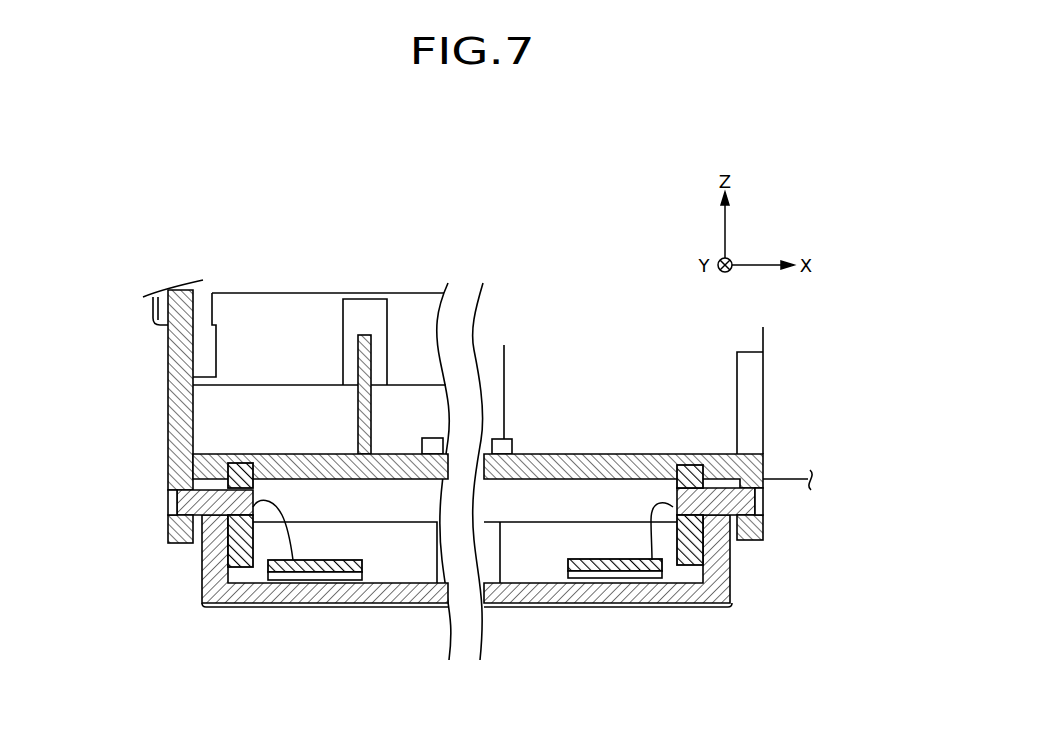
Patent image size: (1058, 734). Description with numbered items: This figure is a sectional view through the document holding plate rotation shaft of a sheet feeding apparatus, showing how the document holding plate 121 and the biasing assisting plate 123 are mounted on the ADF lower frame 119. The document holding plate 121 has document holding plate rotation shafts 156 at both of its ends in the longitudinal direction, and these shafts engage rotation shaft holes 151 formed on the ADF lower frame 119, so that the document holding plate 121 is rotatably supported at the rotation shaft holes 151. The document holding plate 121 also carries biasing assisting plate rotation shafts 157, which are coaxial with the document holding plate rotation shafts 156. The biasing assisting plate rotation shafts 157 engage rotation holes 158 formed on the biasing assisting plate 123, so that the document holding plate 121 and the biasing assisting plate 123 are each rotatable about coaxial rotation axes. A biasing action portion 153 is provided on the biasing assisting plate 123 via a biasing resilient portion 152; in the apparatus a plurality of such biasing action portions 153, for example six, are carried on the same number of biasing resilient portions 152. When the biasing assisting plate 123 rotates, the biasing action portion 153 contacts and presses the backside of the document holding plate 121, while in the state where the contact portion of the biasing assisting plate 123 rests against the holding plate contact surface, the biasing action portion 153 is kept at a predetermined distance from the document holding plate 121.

The ADF lower frame 119 is at (167, 360).
The biasing assisting plate 123 is at (237, 467).
The document holding plate 121 is at (230, 597).
The rotation shaft holes 151 is at (168, 512).
The document holding plate rotation shafts 156 is at (173, 503).
The biasing assisting plate rotation shafts 157 is at (253, 482).
The biasing resilient portion 152 is at (330, 560).
The biasing action portion 153 is at (345, 578).
The rotation holes 158 is at (299, 578).